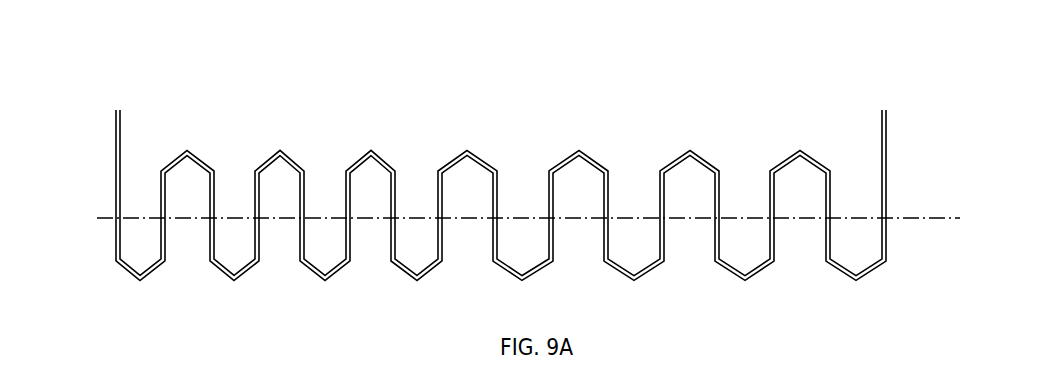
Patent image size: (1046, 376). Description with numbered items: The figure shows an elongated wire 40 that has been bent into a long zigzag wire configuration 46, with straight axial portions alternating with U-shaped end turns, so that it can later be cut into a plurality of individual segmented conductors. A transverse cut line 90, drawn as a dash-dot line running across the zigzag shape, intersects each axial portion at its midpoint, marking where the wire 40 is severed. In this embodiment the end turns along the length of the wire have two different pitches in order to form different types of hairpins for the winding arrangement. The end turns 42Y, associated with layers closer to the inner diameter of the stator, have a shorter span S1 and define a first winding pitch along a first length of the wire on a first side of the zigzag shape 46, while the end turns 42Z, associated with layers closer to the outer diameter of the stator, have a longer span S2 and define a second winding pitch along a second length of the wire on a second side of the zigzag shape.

The wire 40 is at (116, 150).
The end turns 42Y is at (352, 152).
The end turns 42Z is at (663, 154).
The zigzag wire configuration 46 is at (467, 144).
The cut line 90 is at (906, 218).
The span S1 is at (299, 227).
The span S2 is at (603, 227).